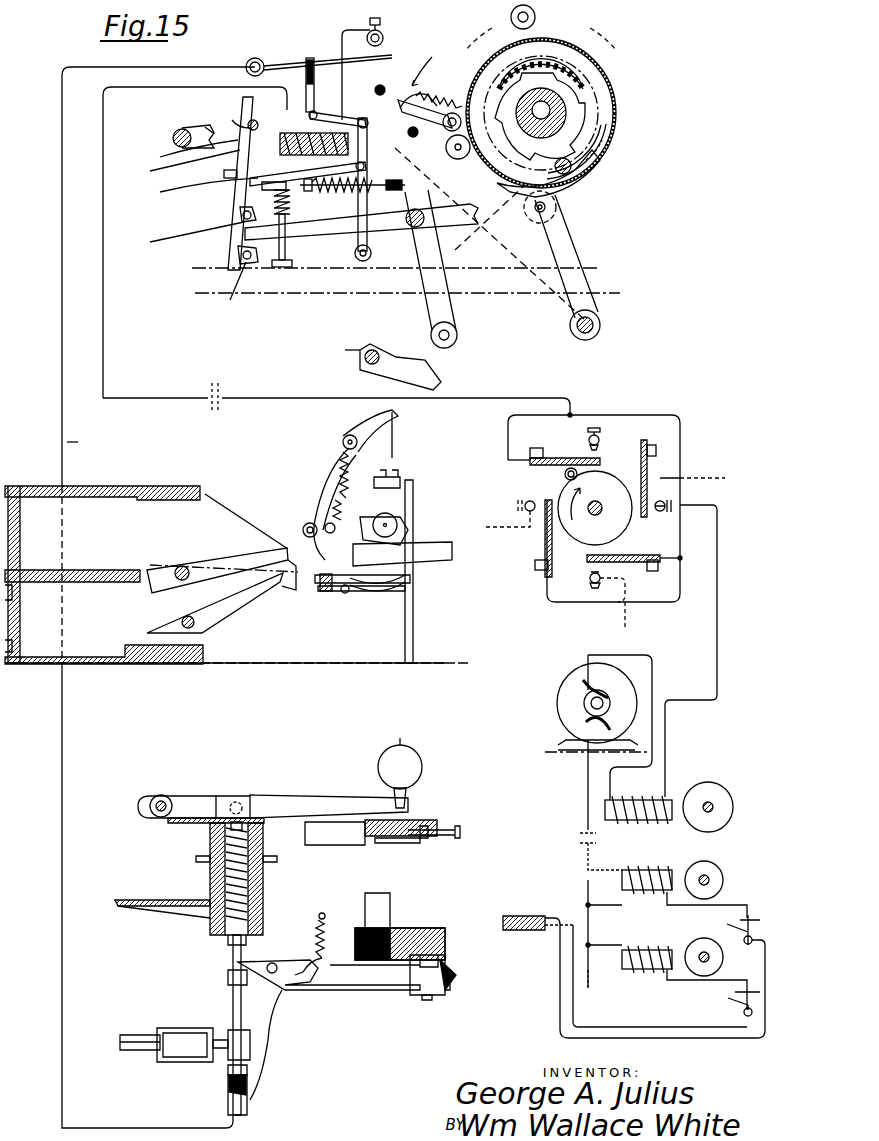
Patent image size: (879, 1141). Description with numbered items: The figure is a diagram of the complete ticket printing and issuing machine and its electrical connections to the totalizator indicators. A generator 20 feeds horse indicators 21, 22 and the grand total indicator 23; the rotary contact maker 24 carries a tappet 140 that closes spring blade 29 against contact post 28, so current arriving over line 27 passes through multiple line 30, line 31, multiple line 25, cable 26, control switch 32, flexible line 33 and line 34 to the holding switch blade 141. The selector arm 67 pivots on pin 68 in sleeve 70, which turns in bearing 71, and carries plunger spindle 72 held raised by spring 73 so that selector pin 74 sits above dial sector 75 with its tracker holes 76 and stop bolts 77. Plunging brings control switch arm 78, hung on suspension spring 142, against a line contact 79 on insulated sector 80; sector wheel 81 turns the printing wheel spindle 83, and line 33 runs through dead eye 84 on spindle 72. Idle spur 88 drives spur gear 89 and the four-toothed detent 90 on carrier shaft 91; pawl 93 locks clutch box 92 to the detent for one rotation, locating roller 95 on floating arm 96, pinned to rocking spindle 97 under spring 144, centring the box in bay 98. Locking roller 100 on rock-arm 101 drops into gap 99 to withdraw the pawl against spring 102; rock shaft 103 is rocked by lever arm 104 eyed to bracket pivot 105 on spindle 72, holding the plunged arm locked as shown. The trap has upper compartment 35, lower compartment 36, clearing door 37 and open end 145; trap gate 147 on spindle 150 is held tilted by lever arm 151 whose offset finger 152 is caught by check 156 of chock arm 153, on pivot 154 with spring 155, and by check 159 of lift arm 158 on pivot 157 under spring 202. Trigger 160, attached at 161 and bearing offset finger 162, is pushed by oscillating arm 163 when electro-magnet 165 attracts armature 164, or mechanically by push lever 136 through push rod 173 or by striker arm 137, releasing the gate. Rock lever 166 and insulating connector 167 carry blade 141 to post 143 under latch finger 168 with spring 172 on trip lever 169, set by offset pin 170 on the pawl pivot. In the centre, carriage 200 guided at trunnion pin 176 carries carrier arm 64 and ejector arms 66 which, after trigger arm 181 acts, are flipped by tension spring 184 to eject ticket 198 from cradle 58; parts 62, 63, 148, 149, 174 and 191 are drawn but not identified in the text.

The electric generator 20 is at (556, 700).
The horse indicator 21 is at (702, 868).
The horse indicator 22 is at (704, 950).
The grand total indicator 23 is at (706, 792).
The rotary contact maker 24 is at (622, 532).
The multiple line 25 is at (594, 916).
The cable 26 is at (516, 916).
The line 27 is at (293, 399).
The contact post 28 is at (600, 438).
The spring blade 29 is at (556, 462).
The multiple line 30 is at (655, 612).
The line 31 is at (717, 658).
The control switch 32 is at (447, 990).
The flexible line 33 is at (280, 1038).
The line 34 is at (89, 441).
The upper compartment 35 is at (102, 574).
The lower compartment 36 is at (104, 617).
The clearing door 37 is at (14, 610).
The cradle 58 is at (326, 592).
The curved arm 62 is at (325, 481).
The pivot 63 is at (343, 440).
The carrier arm 64 is at (398, 414).
The ejector arms 66 is at (400, 570).
The selector arm 67 is at (290, 794).
The pivot pin 68 is at (165, 800).
The sleeve 70 is at (265, 876).
The vertical bearing 71 is at (262, 826).
The plunger spindle 72 is at (230, 996).
The helical spring 73 is at (210, 874).
The selector pin 74 is at (395, 843).
The dial sector 75 is at (434, 825).
The tracker holes 76 is at (418, 812).
The stop bolt 77 is at (462, 830).
The control switch arm 78 is at (362, 990).
The line contact 79 is at (418, 990).
The insulated sector 80 is at (395, 928).
The sector wheel 81 is at (160, 912).
The spindle 83 is at (355, 356).
The dead eye 84 is at (252, 1104).
The idle spur 88 is at (560, 25).
The spur gear 89 is at (575, 80).
The four-toothed detent 90 is at (587, 92).
The carrier shaft 91 is at (566, 112).
The clutch box 92 is at (474, 84).
The pawl 93 is at (572, 170).
The locating roller 95 is at (558, 207).
The floating arm 96 is at (458, 206).
The rocking spindle 97 is at (424, 224).
The bay 98 is at (605, 150).
The gap 99 is at (490, 234).
The locking roller 100 is at (447, 152).
The rock-arm 101 is at (556, 252).
The spring 102 is at (603, 125).
The rock shaft 103 is at (602, 323).
The adjustable lever arm 104 is at (184, 1062).
The bracket pivot 105 is at (172, 1028).
The push lever 136 is at (458, 318).
The striker arm 137 is at (404, 349).
The tappet 140 is at (565, 478).
The holding switch blade 141 is at (328, 58).
The suspension spring 142 is at (307, 944).
The holding switch contact post 143 is at (385, 30).
The helical spring 144 is at (262, 186).
The open end 145 is at (222, 514).
The trap gate 147 is at (228, 562).
The bracket 148 is at (290, 580).
The arm 149 is at (225, 605).
The spindle 150 is at (176, 135).
The lever arm 151 is at (206, 127).
The offset finger 152 is at (255, 122).
The oscillating chock arm 153 is at (177, 166).
The pivot 154 is at (226, 291).
The coil spring 155 is at (240, 250).
The check 156 is at (236, 124).
The pivot 157 is at (181, 235).
The lift arm 158 is at (195, 186).
The check 159 is at (185, 151).
The trigger 160 is at (367, 158).
The pivot connection 161 is at (224, 174).
The offset finger 162 is at (282, 174).
The oscillating arm 163 is at (368, 172).
The armature 164 is at (350, 143).
The electro-magnet 165 is at (303, 200).
The rock lever 166 is at (350, 118).
The insulating connector 167 is at (306, 62).
The latch finger 168 is at (425, 61).
The trip lever 169 is at (418, 133).
The offset roller pin 170 is at (580, 186).
The latch finger spring 172 is at (438, 96).
The push rod 173 is at (408, 185).
The platform 174 is at (385, 592).
The trunnion pin 176 is at (398, 524).
The trigger arm 181 is at (402, 554).
The tension spring 184 is at (338, 462).
The gear 191 is at (303, 528).
The ticket 198 is at (414, 600).
The carriage 200 is at (330, 510).
The spring 202 is at (240, 212).